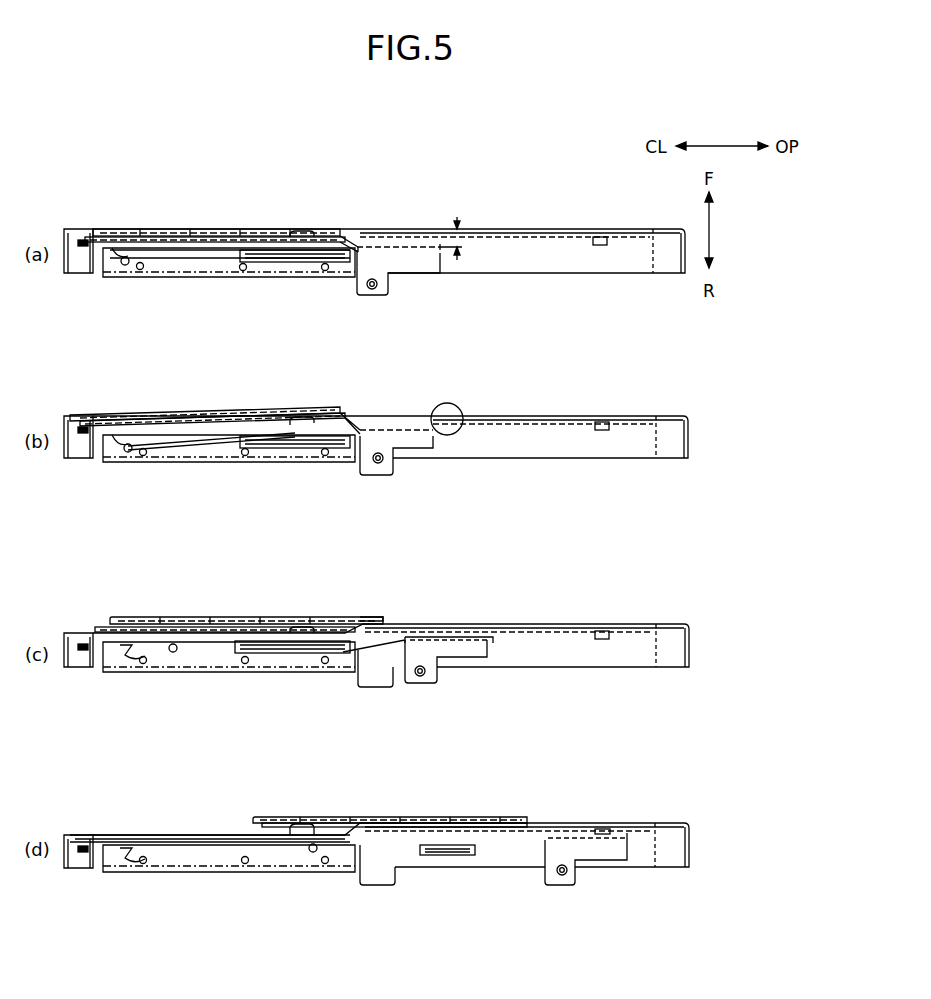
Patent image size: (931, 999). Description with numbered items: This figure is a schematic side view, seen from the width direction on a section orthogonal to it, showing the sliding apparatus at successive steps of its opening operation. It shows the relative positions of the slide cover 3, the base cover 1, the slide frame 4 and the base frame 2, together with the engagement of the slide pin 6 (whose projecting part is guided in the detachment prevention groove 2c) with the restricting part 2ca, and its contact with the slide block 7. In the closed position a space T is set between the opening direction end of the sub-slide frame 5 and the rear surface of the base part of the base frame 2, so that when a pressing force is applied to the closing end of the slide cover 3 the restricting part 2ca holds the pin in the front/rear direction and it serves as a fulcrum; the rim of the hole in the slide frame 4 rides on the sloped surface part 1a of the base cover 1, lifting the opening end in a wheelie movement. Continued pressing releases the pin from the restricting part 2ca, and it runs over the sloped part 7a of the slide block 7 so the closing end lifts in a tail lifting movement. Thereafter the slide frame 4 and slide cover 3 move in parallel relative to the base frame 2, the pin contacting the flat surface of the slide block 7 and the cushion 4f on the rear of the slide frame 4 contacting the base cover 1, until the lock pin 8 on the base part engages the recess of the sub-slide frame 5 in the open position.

The base cover 1 is at (480, 229).
The sloped surface part 1a is at (300, 231).
The base frame 2 is at (353, 242).
The detachment prevention groove 2c is at (143, 256).
The restricting part 2ca is at (117, 248).
The slide cover 3 is at (192, 237).
The slide frame 4 is at (236, 229).
The cushion 4f is at (365, 619).
The sub-slide frame 5 is at (412, 258).
The slide pin 6 is at (125, 266).
The slide block 7 is at (188, 650).
The sloped part 7a is at (143, 445).
The lock pin 8 is at (607, 241).
The space T is at (462, 252).